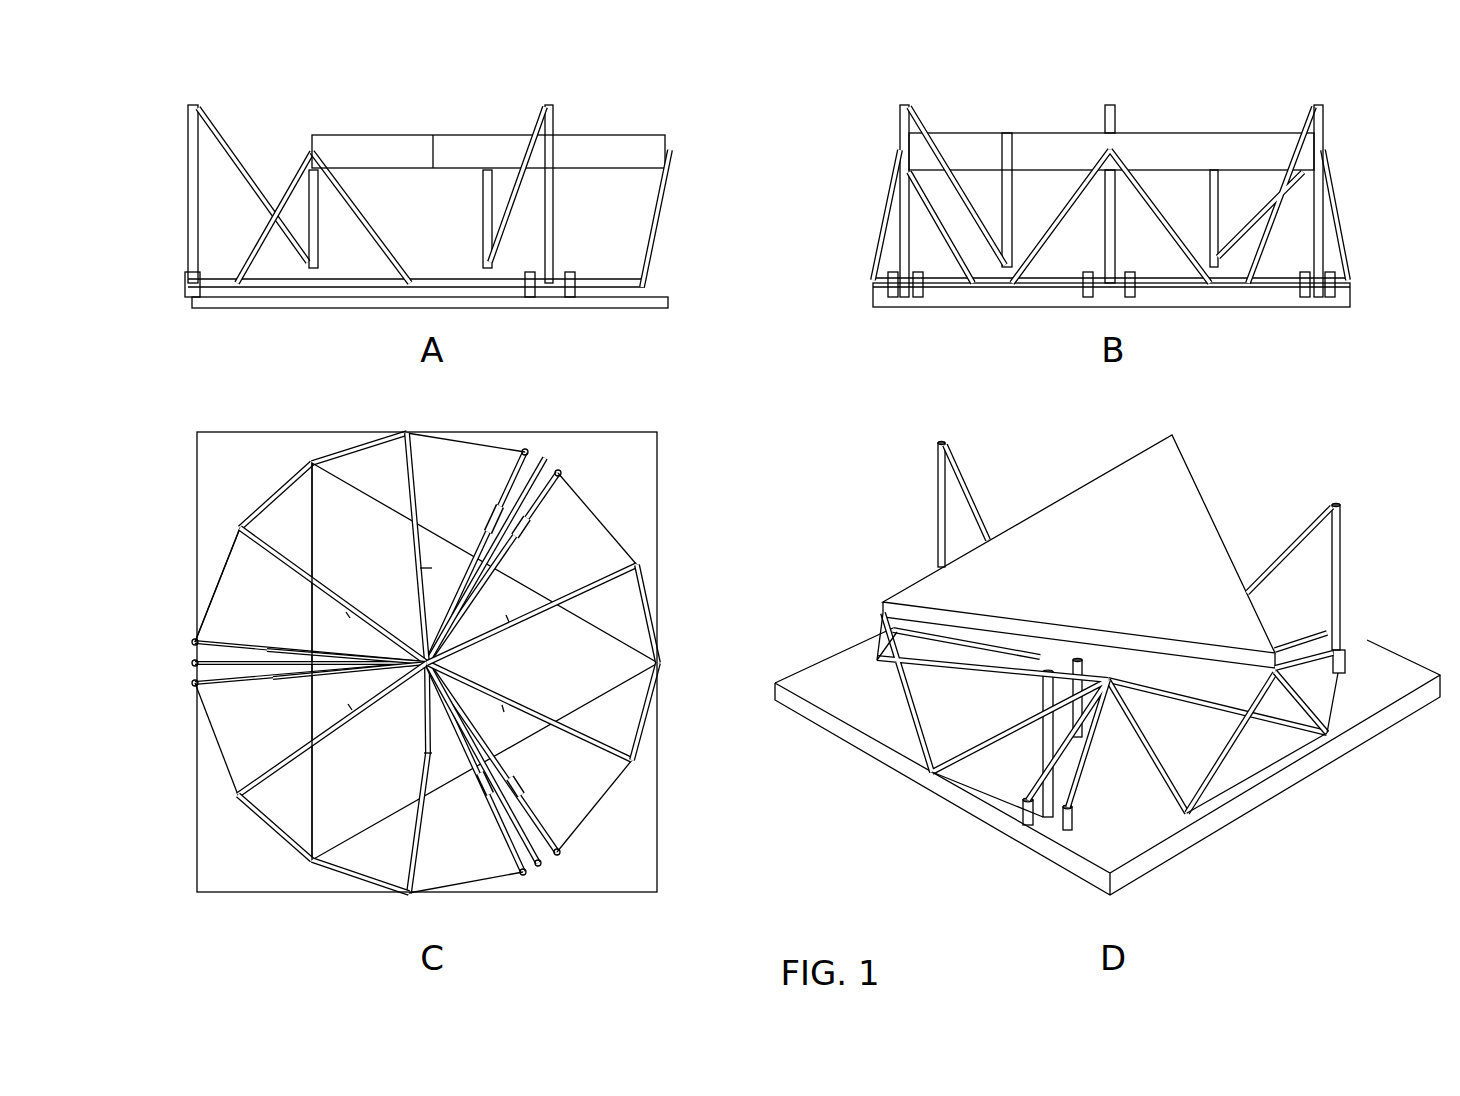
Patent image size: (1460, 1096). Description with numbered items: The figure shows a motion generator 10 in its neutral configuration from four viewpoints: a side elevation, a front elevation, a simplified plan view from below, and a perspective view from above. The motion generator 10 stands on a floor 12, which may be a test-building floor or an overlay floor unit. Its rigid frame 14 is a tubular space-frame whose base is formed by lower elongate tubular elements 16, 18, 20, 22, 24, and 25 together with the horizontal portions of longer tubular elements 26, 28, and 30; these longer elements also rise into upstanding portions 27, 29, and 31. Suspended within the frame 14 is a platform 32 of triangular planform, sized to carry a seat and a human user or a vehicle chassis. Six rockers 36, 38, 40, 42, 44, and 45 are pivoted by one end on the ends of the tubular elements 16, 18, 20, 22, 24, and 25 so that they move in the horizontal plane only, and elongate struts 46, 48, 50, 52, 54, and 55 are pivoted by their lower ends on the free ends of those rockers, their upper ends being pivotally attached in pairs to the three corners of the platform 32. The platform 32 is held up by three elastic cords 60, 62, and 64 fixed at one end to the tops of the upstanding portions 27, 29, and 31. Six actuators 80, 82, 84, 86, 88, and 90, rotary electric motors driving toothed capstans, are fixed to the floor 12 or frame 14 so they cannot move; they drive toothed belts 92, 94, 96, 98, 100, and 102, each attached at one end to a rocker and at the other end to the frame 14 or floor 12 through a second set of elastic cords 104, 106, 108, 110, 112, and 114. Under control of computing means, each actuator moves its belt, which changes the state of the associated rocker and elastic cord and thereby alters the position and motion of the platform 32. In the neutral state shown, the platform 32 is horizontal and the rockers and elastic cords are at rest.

The motion generator 10 is at (774, 504).
The floor 12 is at (675, 292).
The rigid frame 14 is at (560, 110).
The lower elongate tubular element 16 is at (482, 688).
The lower elongate tubular element 18 is at (424, 735).
The lower elongate tubular element 20 is at (368, 700).
The lower elongate tubular element 22 is at (378, 630).
The lower elongate tubular element 24 is at (426, 590).
The lower elongate tubular element 25 is at (495, 628).
The longer tubular element 26 is at (542, 868).
The upstanding portion 27 is at (1325, 122).
The longer tubular element 28 is at (548, 460).
The upstanding portion 29 is at (556, 222).
The longer tubular element 30 is at (192, 664).
The upstanding portion 31 is at (188, 192).
The platform 32 is at (470, 138).
The rocker 36 is at (626, 765).
The rocker 38 is at (402, 870).
The rocker 40 is at (255, 805).
The rocker 42 is at (210, 598).
The rocker 44 is at (418, 455).
The rocker 45 is at (637, 565).
The elongate strut 46 is at (650, 712).
The elongate strut 48 is at (345, 878).
The elongate strut 50 is at (290, 850).
The elongate strut 52 is at (258, 238).
The elongate strut 54 is at (378, 233).
The elongate strut 55 is at (655, 610).
The elastic cord 60 is at (500, 234).
The elastic cord 62 is at (1300, 548).
The elastic cord 64 is at (243, 165).
The actuator 80 is at (1305, 298).
The actuator 82 is at (1335, 288).
The actuator 84 is at (1130, 272).
The actuator 86 is at (1088, 272).
The actuator 88 is at (892, 298).
The actuator 90 is at (918, 298).
The toothed belt 92 is at (580, 820).
The toothed belt 94 is at (460, 885).
The toothed belt 96 is at (215, 770).
The toothed belt 98 is at (222, 568).
The toothed belt 100 is at (478, 442).
The toothed belt 102 is at (610, 520).
The elastic cord 104 is at (518, 792).
The elastic cord 106 is at (485, 795).
The elastic cord 108 is at (280, 682).
The elastic cord 110 is at (272, 648).
The elastic cord 112 is at (485, 525).
The elastic cord 114 is at (518, 535).